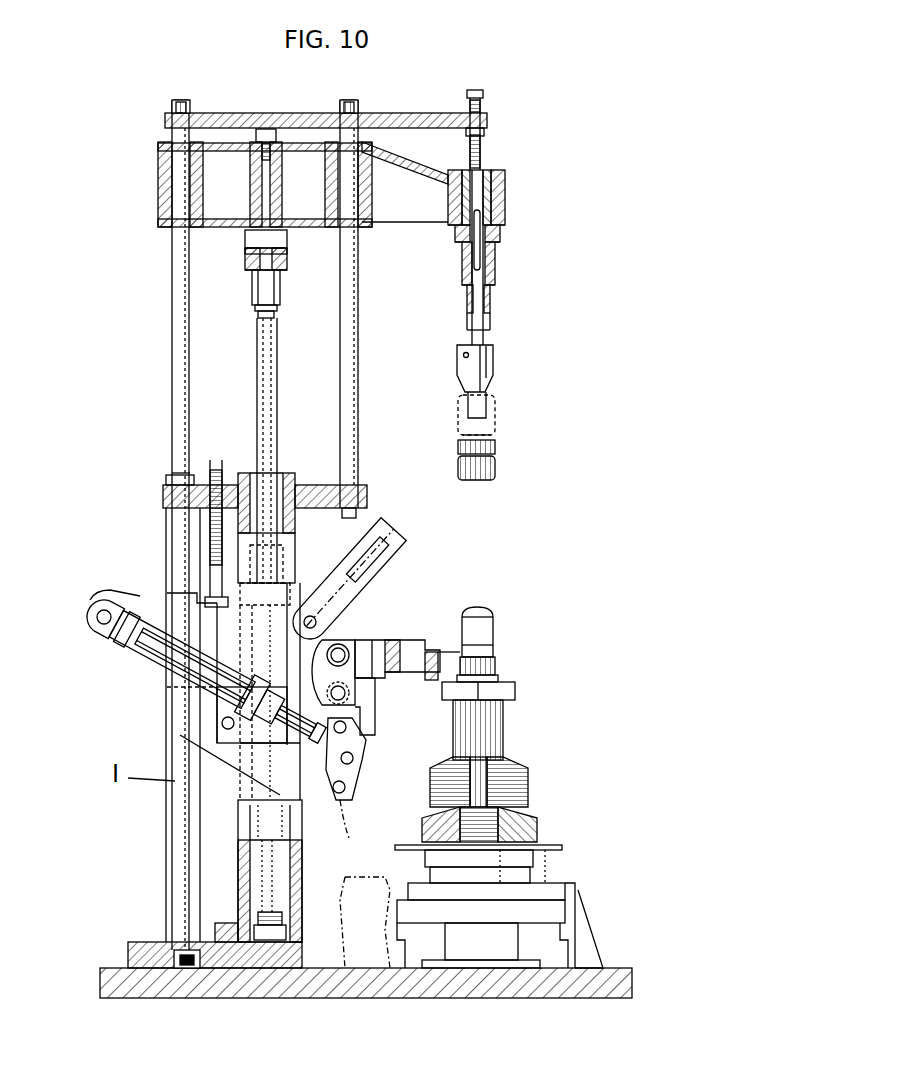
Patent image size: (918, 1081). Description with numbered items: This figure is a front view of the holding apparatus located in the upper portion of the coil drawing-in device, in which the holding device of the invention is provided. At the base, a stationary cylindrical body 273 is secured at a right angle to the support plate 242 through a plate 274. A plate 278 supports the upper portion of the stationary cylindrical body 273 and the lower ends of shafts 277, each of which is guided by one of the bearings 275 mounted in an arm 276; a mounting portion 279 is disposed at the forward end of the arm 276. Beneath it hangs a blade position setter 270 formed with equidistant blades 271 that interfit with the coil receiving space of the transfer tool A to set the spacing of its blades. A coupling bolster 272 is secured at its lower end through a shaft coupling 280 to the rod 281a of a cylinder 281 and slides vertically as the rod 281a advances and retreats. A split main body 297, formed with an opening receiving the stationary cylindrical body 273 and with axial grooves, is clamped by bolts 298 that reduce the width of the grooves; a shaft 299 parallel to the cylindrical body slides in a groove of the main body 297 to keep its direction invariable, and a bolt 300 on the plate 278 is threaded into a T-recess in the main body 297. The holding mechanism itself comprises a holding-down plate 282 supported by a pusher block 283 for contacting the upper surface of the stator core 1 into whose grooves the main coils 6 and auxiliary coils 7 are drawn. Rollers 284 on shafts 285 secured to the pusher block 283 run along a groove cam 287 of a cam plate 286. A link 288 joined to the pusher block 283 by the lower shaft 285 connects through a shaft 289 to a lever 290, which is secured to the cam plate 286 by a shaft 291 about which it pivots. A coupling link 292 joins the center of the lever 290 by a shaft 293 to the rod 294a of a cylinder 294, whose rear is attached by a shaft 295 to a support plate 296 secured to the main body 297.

The support plate 242 is at (418, 985).
The plate 274 is at (230, 966).
The cylinder 281 is at (275, 935).
The rod 281a is at (262, 370).
The link 288 is at (290, 768).
The shaft 299 is at (173, 908).
The shafts 277 is at (348, 350).
The bearings 275 is at (366, 226).
The arm 276 is at (497, 185).
The mounting portion 279 is at (493, 358).
The blade position setter 270 is at (486, 422).
The blades 271 is at (480, 462).
The plate 278 is at (332, 485).
The stationary cylindrical body 273 is at (285, 576).
The shaft coupling 280 is at (252, 290).
The coupling bolster 272 is at (245, 240).
The bolt 300 is at (214, 562).
The main body 297 is at (195, 600).
The bolts 298 is at (222, 726).
The cylinder 294 is at (140, 650).
The rod 294a is at (250, 780).
The shaft 295 is at (101, 625).
The support plate 296 is at (150, 596).
The groove cam 287 is at (362, 605).
The shafts 285 is at (348, 650).
The rollers 284 is at (327, 665).
The pusher block 283 is at (397, 642).
The holding-down plate 282 is at (433, 655).
The cam plate 286 is at (364, 721).
The coupling link 292 is at (330, 782).
The shaft 291 is at (345, 731).
The lever 290 is at (352, 763).
The shaft 293 is at (342, 792).
The shaft 289 is at (345, 802).
The stator core 1 is at (505, 695).
The transfer tool A is at (487, 745).
The main coils 6 is at (524, 775).
The auxiliary coils 7 is at (532, 816).